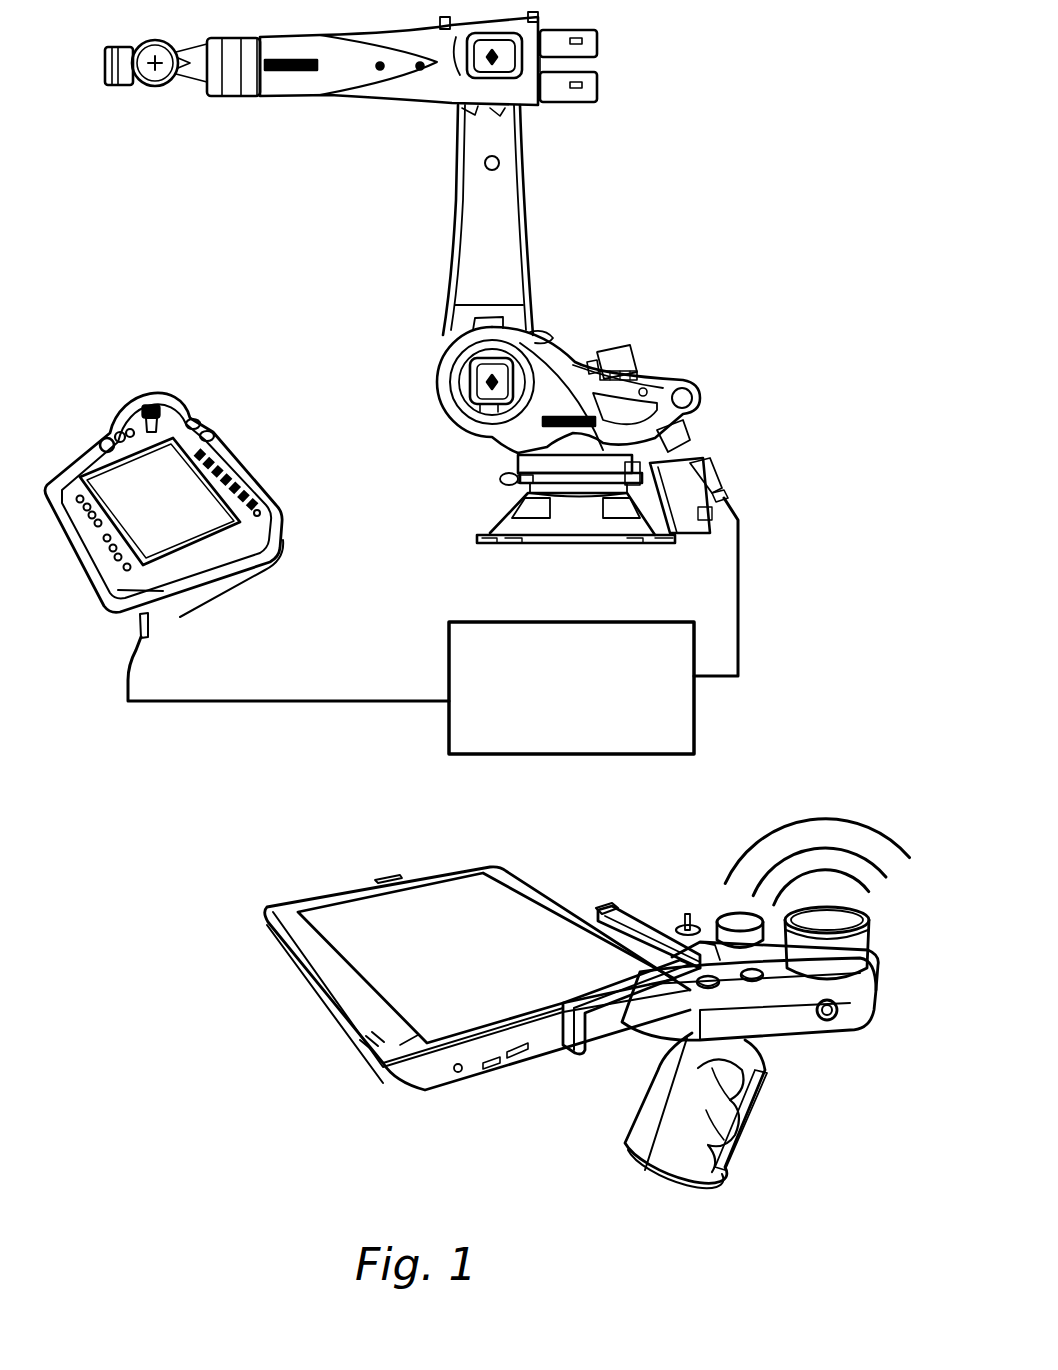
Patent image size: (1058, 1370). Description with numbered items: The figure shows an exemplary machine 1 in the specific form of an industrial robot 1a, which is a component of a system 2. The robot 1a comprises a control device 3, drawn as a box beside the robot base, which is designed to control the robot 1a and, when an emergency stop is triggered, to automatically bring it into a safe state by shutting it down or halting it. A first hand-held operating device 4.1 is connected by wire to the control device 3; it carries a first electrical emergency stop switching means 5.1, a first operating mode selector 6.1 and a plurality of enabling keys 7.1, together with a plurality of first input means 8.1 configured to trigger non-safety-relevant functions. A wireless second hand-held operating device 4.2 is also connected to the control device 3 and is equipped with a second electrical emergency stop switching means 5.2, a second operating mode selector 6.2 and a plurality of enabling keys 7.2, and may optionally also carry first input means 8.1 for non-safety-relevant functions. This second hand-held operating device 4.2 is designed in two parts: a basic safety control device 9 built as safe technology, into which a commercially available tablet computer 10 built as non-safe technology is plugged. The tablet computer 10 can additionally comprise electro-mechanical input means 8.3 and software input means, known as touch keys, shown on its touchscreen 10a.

The machine 1 is at (560, 190).
The robot 1a is at (416, 277).
The system 2 is at (416, 277).
The control device 3 is at (480, 635).
The first hand-held operating device 4.1 is at (258, 474).
The first electrical emergency stop switching means 5.1 is at (140, 395).
The first operating mode selector 6.1 is at (102, 440).
The enabling keys 7.1 is at (230, 597).
The first input means 8.1 is at (87, 510).
The tablet computer 10 is at (288, 918).
The touchscreen 10a is at (520, 972).
The electro-mechanical input means 8.3 is at (360, 1048).
The second hand-held operating device 4.2 is at (778, 1012).
The second electrical emergency stop switching means 5.2 is at (742, 922).
The second operating mode selector 6.2 is at (605, 913).
The enabling keys 7.2 is at (738, 1117).
The basic safety control device 9 is at (640, 1123).